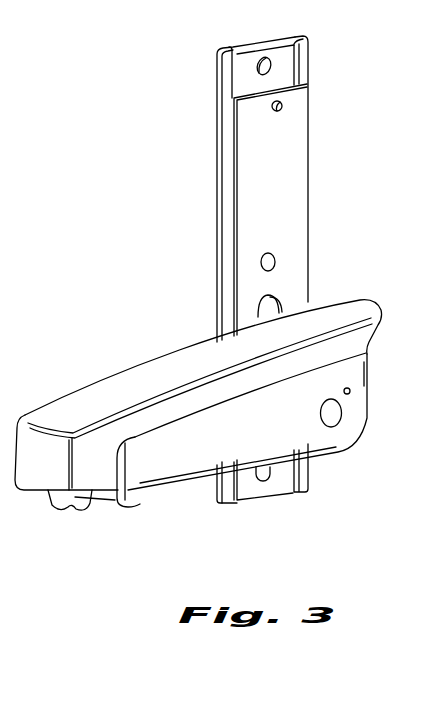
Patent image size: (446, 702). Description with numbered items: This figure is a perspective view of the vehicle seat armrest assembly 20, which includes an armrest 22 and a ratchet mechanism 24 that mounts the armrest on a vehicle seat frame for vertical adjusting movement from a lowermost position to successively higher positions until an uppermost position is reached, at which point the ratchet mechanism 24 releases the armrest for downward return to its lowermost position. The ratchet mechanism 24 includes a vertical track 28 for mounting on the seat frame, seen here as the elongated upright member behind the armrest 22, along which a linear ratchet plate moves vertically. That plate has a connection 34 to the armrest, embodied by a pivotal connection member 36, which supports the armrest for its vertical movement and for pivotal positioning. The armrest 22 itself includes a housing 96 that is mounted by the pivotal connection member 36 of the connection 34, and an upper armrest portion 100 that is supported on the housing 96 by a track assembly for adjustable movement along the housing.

The vehicle seat armrest assembly 20 is at (148, 252).
The armrest 22 is at (107, 372).
The ratchet mechanism 24 is at (311, 171).
The vertical track 28 is at (311, 102).
The connection 34 is at (345, 413).
The pivotal connection member 36 is at (333, 413).
The housing 96 is at (195, 450).
The upper armrest portion 100 is at (193, 361).